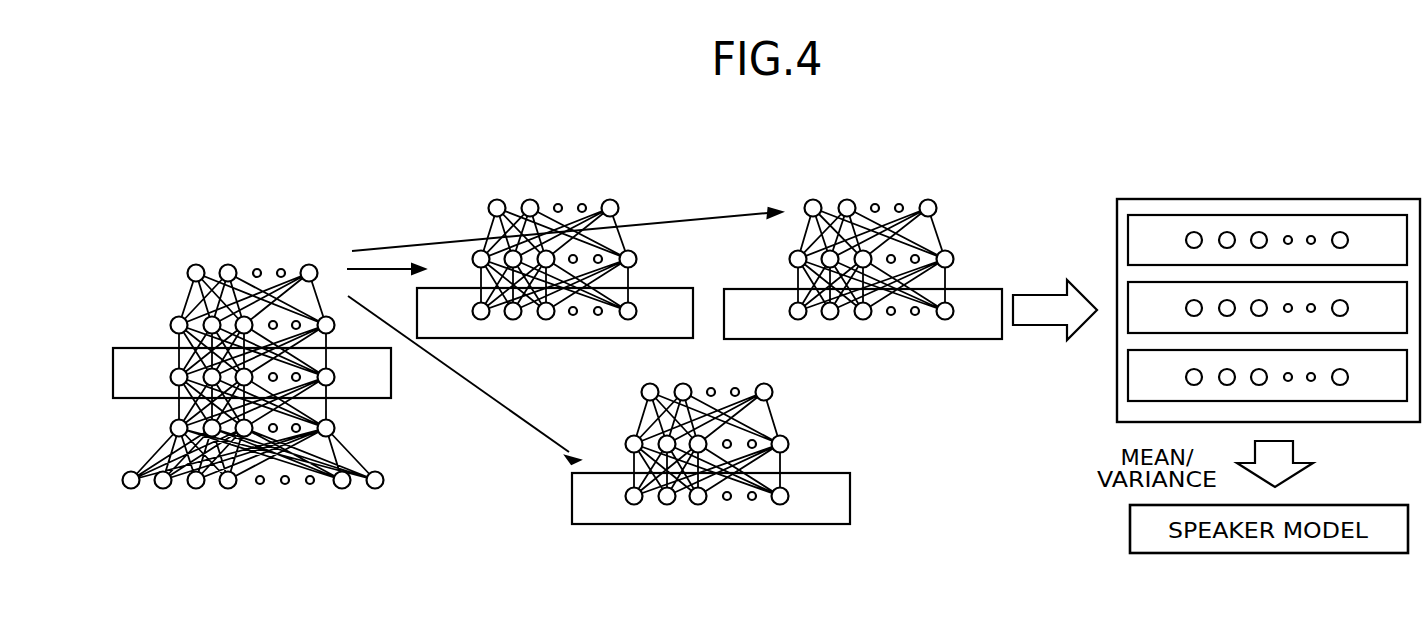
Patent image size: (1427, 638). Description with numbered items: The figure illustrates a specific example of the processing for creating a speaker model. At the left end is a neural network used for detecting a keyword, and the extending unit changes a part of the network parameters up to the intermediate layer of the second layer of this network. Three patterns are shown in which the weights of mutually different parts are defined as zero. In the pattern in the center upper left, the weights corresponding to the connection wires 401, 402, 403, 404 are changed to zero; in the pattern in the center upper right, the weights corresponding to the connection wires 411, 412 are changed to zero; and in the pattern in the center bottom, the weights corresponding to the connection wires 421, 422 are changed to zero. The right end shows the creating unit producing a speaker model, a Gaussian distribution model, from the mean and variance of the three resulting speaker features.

The connection wire 401 is at (505, 222).
The connection wire 402 is at (548, 250).
The connection wire 403 is at (522, 292).
The connection wire 404 is at (548, 298).
The connection wire 411 is at (838, 232).
The connection wire 412 is at (851, 292).
The connection wire 421 is at (705, 430).
The connection wire 422 is at (660, 482).